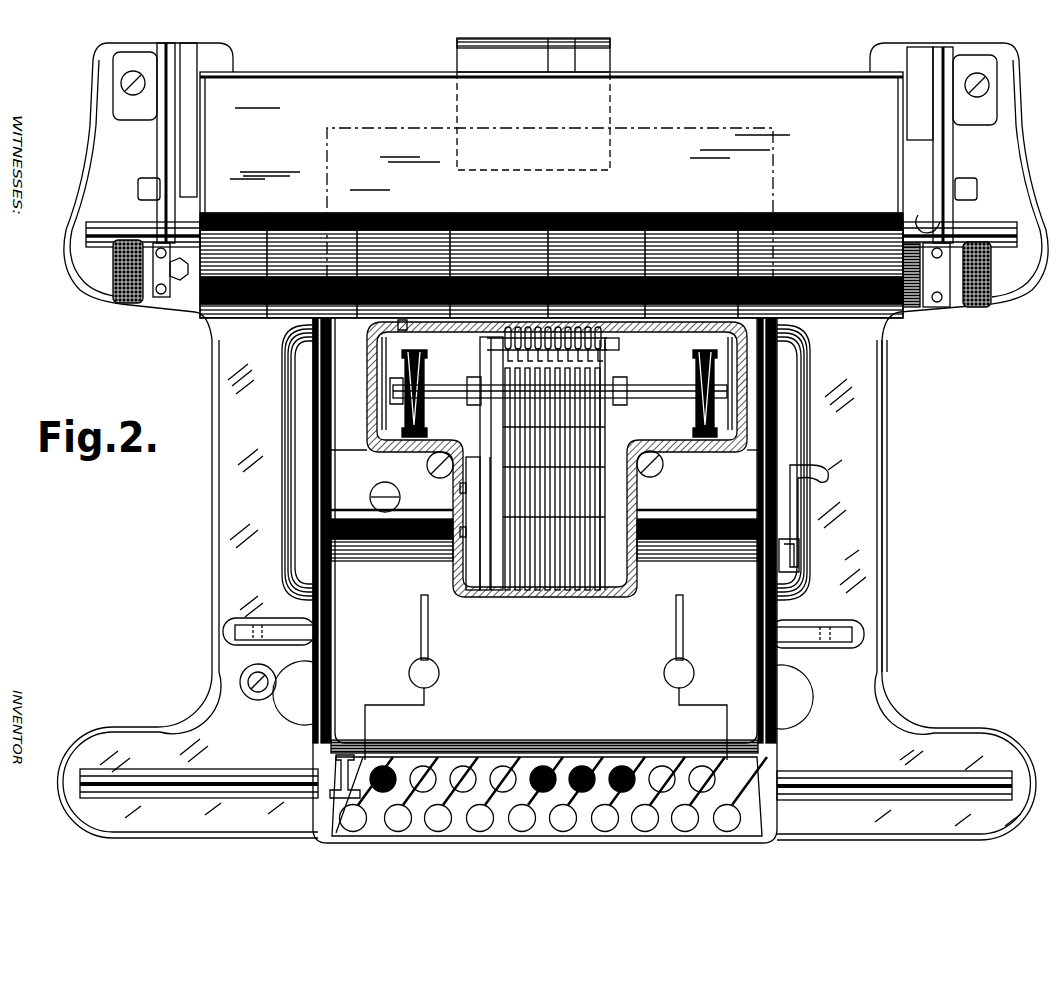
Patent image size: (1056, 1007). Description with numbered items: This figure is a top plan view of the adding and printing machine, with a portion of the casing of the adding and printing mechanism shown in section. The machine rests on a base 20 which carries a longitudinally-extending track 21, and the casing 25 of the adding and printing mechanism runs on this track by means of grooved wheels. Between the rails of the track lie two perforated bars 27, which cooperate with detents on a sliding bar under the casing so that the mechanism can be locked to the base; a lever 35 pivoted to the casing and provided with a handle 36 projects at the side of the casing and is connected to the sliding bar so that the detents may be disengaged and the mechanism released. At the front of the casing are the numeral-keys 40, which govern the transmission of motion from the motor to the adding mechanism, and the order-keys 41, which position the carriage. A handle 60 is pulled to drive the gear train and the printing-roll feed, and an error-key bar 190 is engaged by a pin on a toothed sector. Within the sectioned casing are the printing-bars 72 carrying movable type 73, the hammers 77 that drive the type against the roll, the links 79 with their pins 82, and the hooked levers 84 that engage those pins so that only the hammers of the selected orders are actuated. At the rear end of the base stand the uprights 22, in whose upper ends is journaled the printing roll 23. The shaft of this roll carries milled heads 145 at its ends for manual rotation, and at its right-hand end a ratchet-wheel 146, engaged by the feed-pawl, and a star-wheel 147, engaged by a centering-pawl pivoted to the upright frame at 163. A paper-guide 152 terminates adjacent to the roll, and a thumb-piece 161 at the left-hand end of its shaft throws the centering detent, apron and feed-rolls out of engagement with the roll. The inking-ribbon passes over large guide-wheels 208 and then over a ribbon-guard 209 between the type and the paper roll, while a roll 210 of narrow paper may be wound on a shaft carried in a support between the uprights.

The base 20 is at (553, 441).
The track 21 is at (88, 242).
The uprights 22 is at (157, 141).
The printing roll 23 is at (246, 308).
The casing 25 is at (545, 580).
The perforated bars 27 is at (240, 632).
The lever 35 is at (543, 695).
The handle 36 is at (240, 679).
The numeral-keys 40 is at (339, 811).
The order-keys 41 is at (504, 776).
The handle 60 is at (830, 456).
The printing-bar 72 is at (606, 344).
The type 73 is at (503, 333).
The hammers 77 is at (593, 415).
The link 79 is at (590, 502).
The pin 82 is at (503, 519).
The lever 84 is at (547, 588).
The milled heads 145 is at (557, 289).
The ratchet-wheel 146 is at (906, 313).
The star-wheel 147 is at (921, 309).
The paper-guide 152 is at (551, 186).
The thumb-piece 161 is at (188, 272).
The pivot of centering-pawl 163 is at (933, 230).
The error-key bar 190 is at (684, 629).
The large guide-wheels 208 is at (720, 416).
The ribbon-guard 209 is at (668, 335).
The roll of narrow paper 210 is at (457, 54).